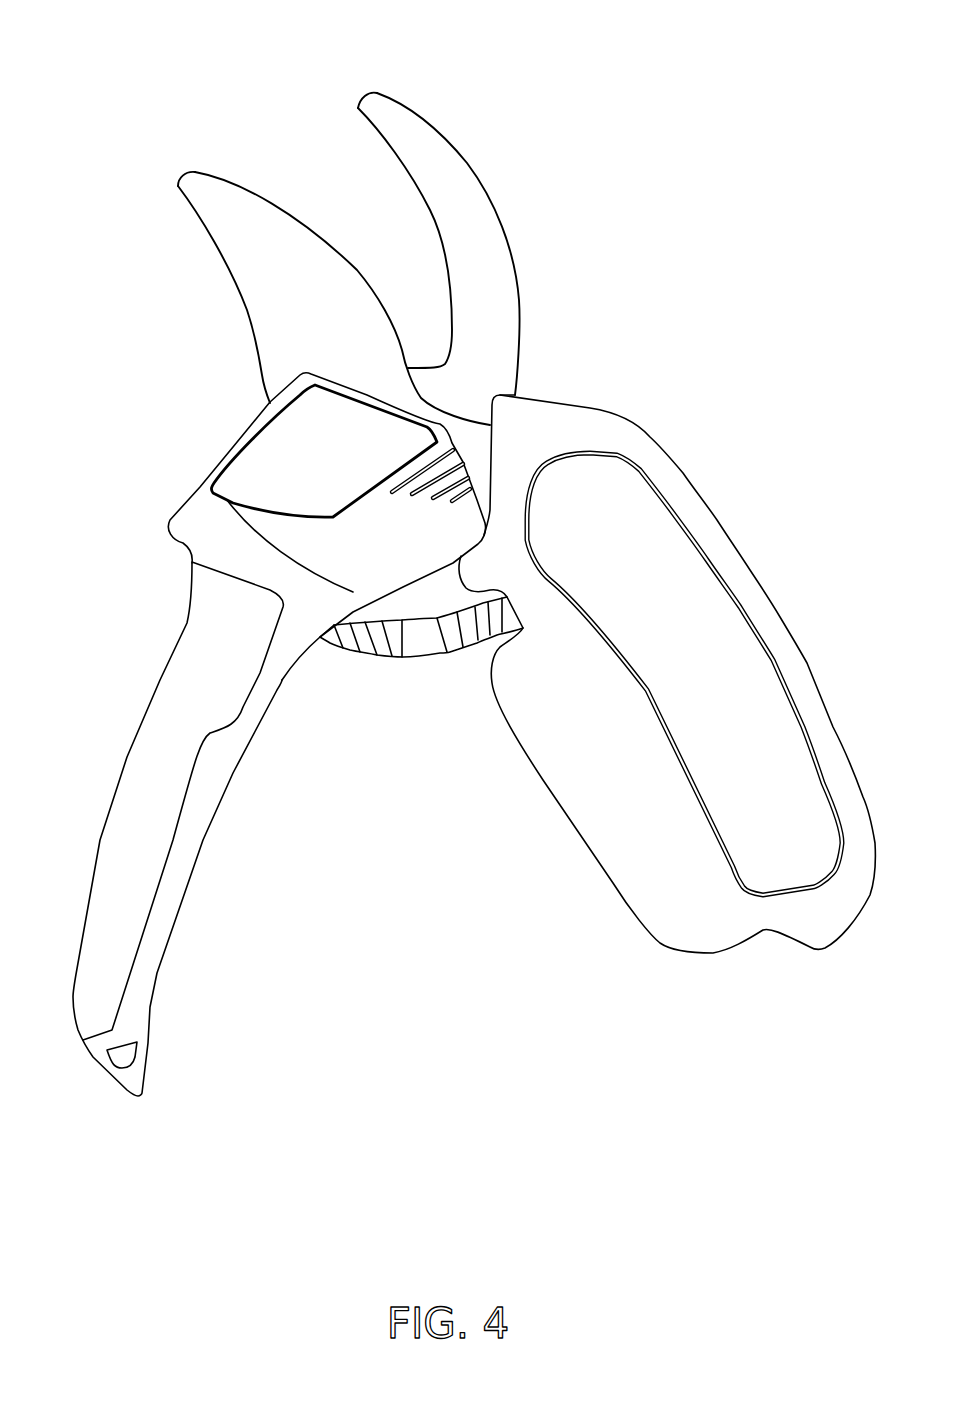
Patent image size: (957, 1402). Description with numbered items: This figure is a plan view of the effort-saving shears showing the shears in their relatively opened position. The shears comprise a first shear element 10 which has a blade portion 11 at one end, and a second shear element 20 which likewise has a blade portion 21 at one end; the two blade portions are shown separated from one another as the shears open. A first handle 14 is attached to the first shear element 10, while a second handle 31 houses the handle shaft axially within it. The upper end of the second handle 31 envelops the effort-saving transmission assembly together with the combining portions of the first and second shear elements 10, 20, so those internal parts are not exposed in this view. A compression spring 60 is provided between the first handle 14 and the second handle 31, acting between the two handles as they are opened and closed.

The first shear element 10 is at (220, 149).
The blade portion 11 is at (288, 234).
The second shear element 20 is at (387, 75).
The blade portion 21 is at (422, 185).
The first handle 14 is at (752, 598).
The second handle 31 is at (140, 786).
The compression spring 60 is at (421, 648).